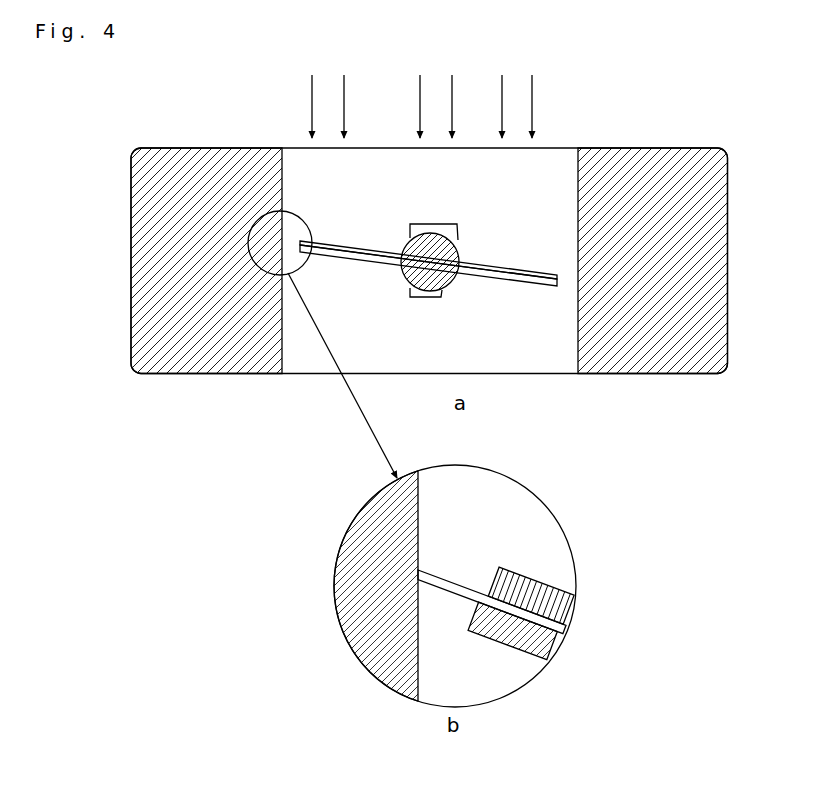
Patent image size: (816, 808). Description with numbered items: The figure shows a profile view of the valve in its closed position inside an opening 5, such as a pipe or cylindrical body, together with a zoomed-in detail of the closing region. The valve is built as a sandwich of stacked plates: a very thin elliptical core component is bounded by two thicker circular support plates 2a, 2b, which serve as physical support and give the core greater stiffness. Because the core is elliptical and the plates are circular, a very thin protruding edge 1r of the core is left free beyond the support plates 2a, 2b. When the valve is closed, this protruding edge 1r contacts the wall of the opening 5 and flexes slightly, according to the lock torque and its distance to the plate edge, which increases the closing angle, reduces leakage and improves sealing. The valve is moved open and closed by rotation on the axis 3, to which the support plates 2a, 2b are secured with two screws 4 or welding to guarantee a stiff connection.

The protruding edge 1r is at (572, 278).
The support plate 2a is at (332, 243).
The support plate 2b is at (347, 252).
The axis 3 is at (433, 248).
The screws 4 is at (455, 228).
The opening 5 is at (208, 193).